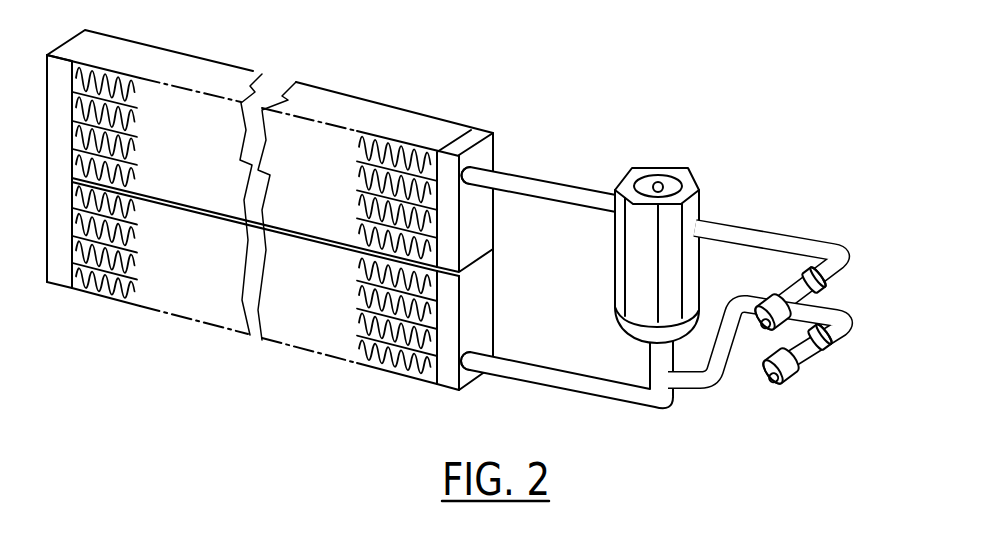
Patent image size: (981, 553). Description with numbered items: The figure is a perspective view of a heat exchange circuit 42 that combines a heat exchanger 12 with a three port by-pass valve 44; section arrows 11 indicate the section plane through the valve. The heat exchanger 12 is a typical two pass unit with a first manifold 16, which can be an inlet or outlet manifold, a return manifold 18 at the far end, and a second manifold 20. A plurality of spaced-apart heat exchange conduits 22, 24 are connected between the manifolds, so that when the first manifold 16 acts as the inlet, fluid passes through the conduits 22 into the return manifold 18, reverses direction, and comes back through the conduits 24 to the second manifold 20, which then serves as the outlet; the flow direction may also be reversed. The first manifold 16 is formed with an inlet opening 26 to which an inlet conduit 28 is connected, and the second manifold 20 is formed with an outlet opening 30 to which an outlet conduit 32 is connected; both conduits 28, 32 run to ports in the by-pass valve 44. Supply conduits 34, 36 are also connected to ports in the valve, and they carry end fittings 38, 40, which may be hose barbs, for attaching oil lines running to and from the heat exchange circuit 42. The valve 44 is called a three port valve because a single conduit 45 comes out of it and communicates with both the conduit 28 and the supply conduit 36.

The section line 11- 11 is at (657, 157).
The heat exchanger 12 is at (213, 343).
The first manifold 16 is at (448, 370).
The return manifold 18 is at (60, 263).
The second manifold 20 is at (470, 140).
The heat exchange conduits 22 is at (207, 276).
The heat exchange conduits 24 is at (207, 155).
The inlet opening 26 is at (468, 360).
The inlet conduit 28 is at (622, 397).
The outlet opening 30 is at (475, 170).
The outlet conduit 32 is at (547, 187).
The supply conduit 34 is at (773, 240).
The supply conduit 36 is at (717, 390).
The end fitting 38 is at (767, 333).
The end fitting 40 is at (773, 387).
The heat exchange circuit 42 is at (528, 70).
The by-pass valve 44 is at (700, 183).
The conduit 45 is at (660, 353).